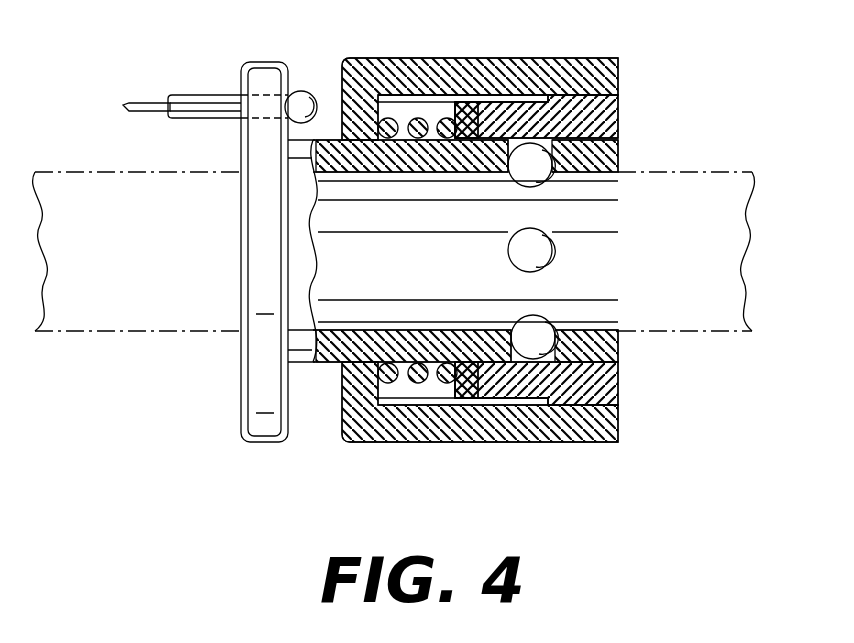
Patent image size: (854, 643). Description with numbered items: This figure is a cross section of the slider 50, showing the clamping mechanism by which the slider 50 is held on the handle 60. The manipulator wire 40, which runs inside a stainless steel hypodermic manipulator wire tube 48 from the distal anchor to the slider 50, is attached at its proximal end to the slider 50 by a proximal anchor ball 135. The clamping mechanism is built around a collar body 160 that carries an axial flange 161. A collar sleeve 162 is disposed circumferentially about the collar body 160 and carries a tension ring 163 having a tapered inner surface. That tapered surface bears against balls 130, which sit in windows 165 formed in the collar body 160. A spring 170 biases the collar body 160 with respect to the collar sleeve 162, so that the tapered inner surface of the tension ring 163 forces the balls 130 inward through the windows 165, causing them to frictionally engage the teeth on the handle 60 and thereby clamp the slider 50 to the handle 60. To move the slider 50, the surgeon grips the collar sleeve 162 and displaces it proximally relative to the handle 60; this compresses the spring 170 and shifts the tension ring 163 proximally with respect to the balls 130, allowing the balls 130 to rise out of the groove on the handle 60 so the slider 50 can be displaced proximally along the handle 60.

The manipulator wire 40 is at (147, 102).
The manipulator wire tube 48 is at (188, 96).
The slider 50 is at (622, 54).
The handle 60 is at (742, 270).
The balls 130 is at (530, 264).
The proximal anchor ball 135 is at (303, 100).
The collar body 160 is at (383, 345).
The axial flange 161 is at (268, 425).
The collar sleeve 162 is at (482, 430).
The tension ring 163 is at (606, 382).
The windows 165 is at (537, 175).
The spring 170 is at (436, 122).